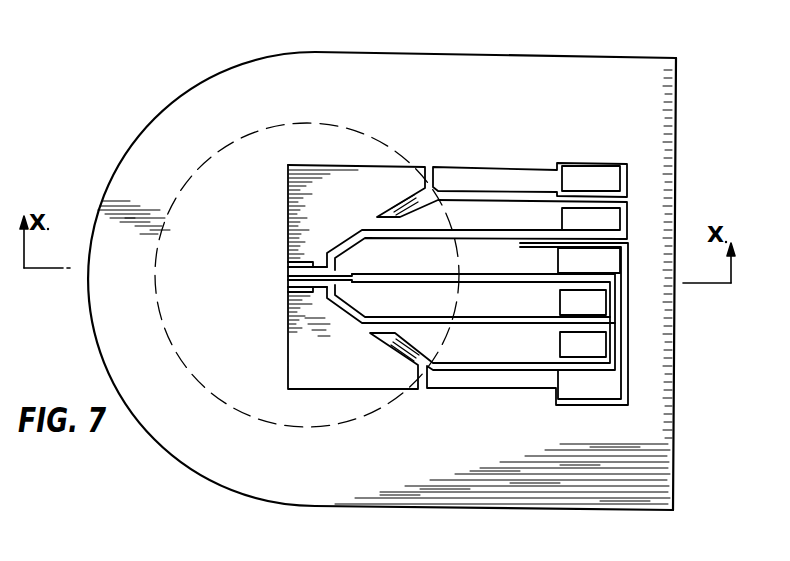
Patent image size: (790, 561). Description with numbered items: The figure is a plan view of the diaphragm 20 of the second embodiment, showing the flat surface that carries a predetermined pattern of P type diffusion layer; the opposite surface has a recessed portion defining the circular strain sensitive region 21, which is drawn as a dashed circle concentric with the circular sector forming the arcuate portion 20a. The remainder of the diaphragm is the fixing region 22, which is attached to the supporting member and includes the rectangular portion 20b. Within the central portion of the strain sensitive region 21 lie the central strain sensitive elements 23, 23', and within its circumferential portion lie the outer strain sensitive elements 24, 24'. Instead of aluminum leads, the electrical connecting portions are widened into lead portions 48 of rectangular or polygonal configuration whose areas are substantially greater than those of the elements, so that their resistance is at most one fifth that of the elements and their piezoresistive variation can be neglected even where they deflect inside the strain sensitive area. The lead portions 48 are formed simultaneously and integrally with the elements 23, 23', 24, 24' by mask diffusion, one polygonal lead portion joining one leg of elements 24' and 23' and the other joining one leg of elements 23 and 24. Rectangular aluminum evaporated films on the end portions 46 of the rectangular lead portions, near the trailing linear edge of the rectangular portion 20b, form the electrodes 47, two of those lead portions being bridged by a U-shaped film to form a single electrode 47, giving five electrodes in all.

The diaphragm 20 is at (379, 282).
The arcuate portion of the diaphragm 20a is at (148, 146).
The rectangular portion 20b is at (526, 62).
The strain sensitive region 21 is at (228, 145).
The fixing region 22 is at (568, 73).
The central strain sensitive element 23 is at (297, 293).
The central strain sensitive element 23' is at (285, 251).
The outer strain sensitive element 24 is at (378, 354).
The outer strain sensitive element 24' is at (389, 195).
The end portions 46 is at (588, 164).
The electrodes 47 is at (617, 172).
The lead portions 48 is at (450, 279).